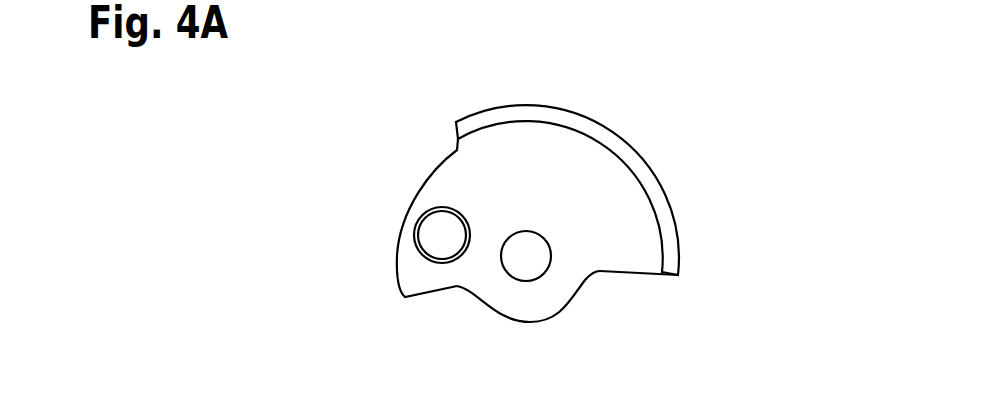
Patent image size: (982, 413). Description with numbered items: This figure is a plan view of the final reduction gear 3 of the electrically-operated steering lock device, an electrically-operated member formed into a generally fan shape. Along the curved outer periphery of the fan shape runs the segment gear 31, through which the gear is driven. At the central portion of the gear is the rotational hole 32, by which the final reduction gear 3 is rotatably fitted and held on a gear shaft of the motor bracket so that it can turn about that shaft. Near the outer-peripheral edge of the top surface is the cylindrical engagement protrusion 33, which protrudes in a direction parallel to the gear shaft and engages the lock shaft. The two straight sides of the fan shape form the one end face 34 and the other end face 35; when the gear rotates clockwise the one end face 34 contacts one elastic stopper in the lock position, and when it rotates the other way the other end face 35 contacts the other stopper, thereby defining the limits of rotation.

The final reduction gear 3 is at (570, 206).
The segment gear 31 is at (617, 138).
The rotational hole 32 is at (537, 267).
The engagement protrusion 33 is at (433, 238).
The one end face 34 is at (626, 275).
The other end face 35 is at (433, 291).